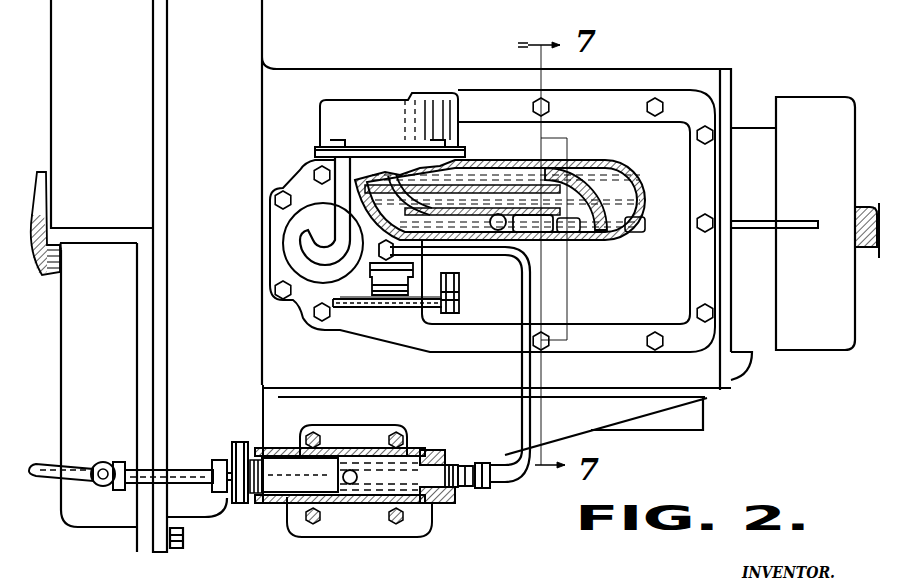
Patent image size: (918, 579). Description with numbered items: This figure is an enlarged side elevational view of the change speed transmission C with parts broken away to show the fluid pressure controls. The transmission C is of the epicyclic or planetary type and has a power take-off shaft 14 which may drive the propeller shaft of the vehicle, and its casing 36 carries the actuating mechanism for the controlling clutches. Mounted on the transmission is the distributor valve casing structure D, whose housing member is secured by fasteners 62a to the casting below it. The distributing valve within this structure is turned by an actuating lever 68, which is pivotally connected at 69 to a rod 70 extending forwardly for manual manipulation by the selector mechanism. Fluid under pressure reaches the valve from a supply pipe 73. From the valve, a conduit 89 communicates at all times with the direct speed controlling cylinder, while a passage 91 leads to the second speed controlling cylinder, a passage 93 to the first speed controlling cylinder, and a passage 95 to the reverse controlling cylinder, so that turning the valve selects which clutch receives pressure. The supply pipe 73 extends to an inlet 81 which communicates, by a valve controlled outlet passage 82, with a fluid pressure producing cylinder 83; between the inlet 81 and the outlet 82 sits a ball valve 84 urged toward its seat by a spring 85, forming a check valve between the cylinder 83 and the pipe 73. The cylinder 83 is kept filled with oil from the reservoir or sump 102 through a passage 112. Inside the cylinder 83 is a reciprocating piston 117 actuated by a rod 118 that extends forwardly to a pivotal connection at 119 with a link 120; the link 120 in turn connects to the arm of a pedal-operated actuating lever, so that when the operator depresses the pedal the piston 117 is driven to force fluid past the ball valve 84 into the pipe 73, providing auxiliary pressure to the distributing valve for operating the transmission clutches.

The change speed transmission C is at (668, 70).
The distributor valve casing structure D is at (340, 100).
The power take-off shaft 14 is at (862, 210).
The casing 36 is at (440, 70).
The fasteners 62a is at (345, 140).
The actuating lever 68 is at (370, 265).
The pivotal connection 69 is at (458, 300).
The rod 70 is at (405, 305).
The supply pipe 73 is at (476, 266).
The inlet 81 is at (455, 490).
The outlet passage 82 is at (428, 470).
The fluid pressure producing cylinder 83 is at (367, 503).
The ball valve 84 is at (440, 470).
The spring 85 is at (455, 475).
The conduit 89 is at (340, 192).
The passage 91 is at (460, 220).
The passage 93 is at (505, 200).
The passage 95 is at (612, 180).
The reservoir or sump 102 is at (432, 523).
The passage 112 is at (350, 470).
The reciprocating piston 117 is at (275, 478).
The rod 118 is at (190, 470).
The pivotal connection 119 is at (103, 470).
The link 120 is at (48, 480).